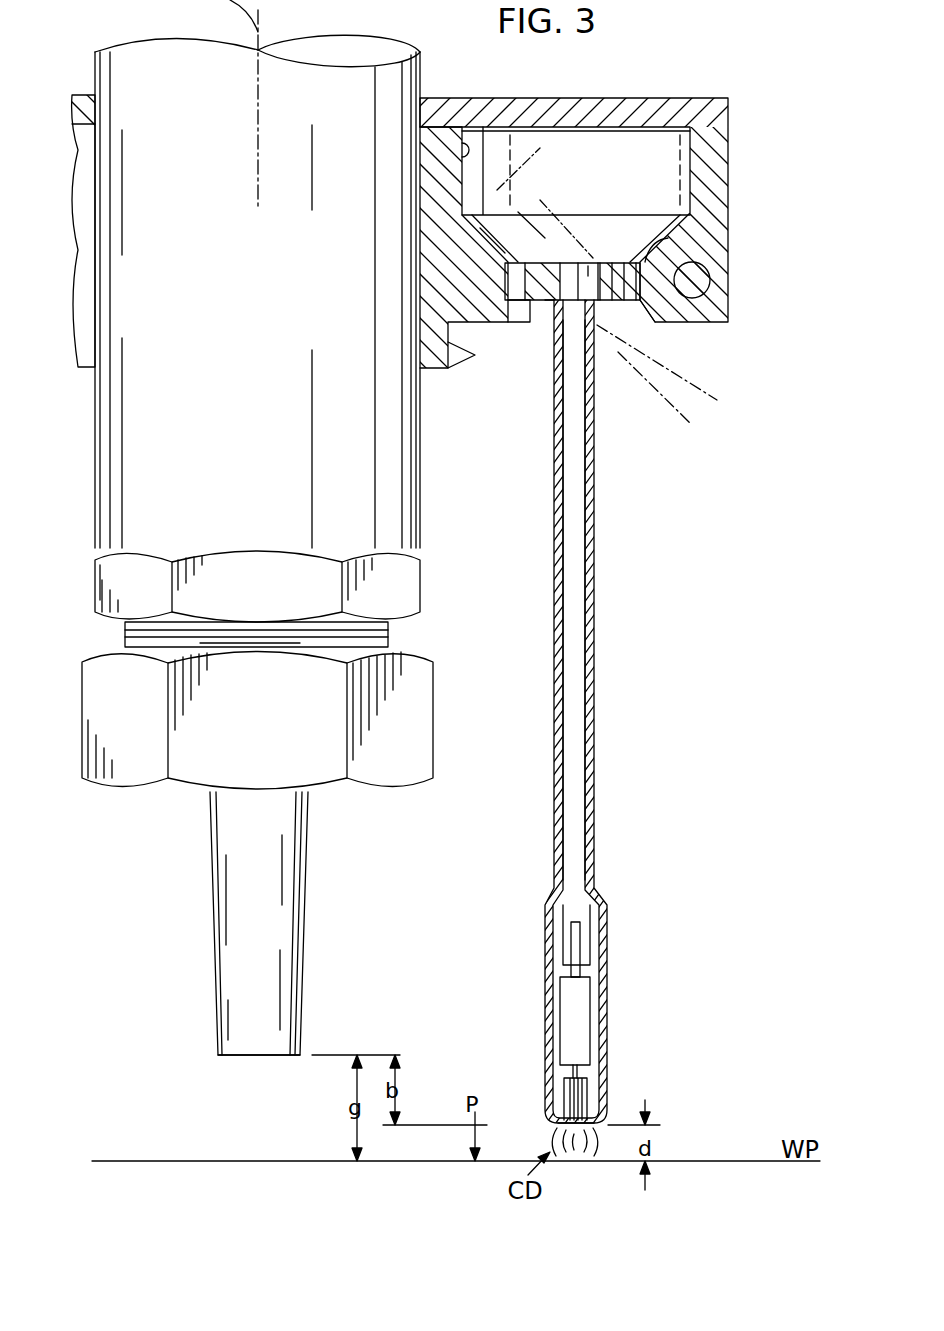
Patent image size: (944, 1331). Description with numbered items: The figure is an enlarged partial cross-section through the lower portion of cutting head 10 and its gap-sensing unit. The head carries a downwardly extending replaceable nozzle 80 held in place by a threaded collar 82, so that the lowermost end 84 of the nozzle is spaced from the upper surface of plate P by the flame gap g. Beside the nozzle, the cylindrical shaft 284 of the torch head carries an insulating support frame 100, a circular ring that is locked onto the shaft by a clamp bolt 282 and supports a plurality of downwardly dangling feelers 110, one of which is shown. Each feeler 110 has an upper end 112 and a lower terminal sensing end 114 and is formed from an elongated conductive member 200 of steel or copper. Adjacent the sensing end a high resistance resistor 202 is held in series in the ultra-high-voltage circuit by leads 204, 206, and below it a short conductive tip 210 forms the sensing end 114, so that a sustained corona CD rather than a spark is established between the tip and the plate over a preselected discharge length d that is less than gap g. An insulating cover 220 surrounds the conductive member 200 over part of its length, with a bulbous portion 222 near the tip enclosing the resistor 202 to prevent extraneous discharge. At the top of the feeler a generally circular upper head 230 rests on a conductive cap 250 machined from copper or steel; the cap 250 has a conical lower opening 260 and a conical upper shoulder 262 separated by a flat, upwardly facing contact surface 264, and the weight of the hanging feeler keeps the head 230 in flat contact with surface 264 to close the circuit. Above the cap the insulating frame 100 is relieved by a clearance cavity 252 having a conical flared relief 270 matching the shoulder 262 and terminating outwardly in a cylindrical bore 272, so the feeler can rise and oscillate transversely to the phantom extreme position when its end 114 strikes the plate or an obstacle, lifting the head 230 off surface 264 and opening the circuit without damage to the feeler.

The cutting head 10 is at (440, 537).
The nozzle 80 is at (298, 918).
The threaded collar 82 is at (430, 747).
The lowermost end of nozzle 84 is at (288, 1058).
The support frame 100 is at (728, 175).
The feeler 110 is at (624, 350).
The upper end of feeler 112 is at (548, 302).
The lower terminal sensing end 114 is at (614, 1108).
The elongated conductive member 200 is at (588, 518).
The high resistance resistor 202 is at (583, 1010).
The resistor lead 204 is at (578, 950).
The resistor lead 206 is at (580, 1088).
The conductive tip 210 is at (568, 1100).
The insulating cover 220 is at (548, 208).
The bulbous portion 222 is at (550, 985).
The upper head 230 is at (532, 167).
The conductive cap 250 is at (665, 300).
The clearance cavity 252 is at (651, 140).
The conical lower opening 260 is at (530, 305).
The conical upper shoulder 262 is at (650, 244).
The flat contact surface 264 is at (506, 283).
The conical flared relief 270 is at (470, 235).
The cylindrical bore 272 is at (458, 150).
The clamp bolt 282 is at (702, 284).
The cylindrical shaft 284 is at (412, 78).